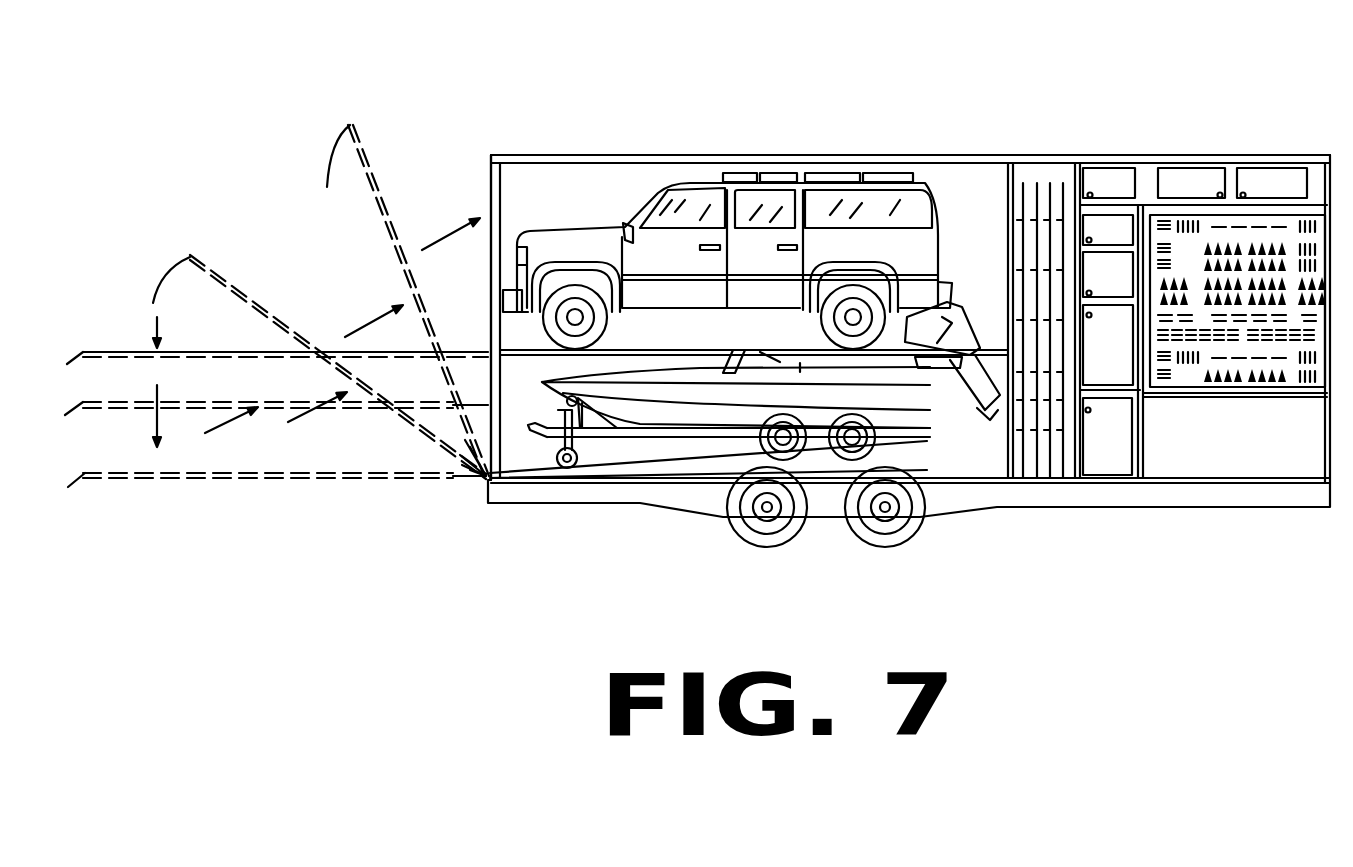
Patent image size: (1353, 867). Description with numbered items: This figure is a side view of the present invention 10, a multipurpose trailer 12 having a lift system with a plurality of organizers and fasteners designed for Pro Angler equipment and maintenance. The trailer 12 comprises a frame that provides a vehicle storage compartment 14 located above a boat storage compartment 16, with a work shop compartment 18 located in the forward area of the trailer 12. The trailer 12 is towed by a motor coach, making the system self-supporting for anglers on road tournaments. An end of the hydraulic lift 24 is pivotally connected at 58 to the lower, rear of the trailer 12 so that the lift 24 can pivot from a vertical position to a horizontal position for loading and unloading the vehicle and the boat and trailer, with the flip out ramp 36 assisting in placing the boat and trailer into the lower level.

The present invention 10 is at (1012, 113).
The trailer 12 is at (808, 160).
The vehicle storage compartment 14 is at (537, 158).
The boat storage compartment 16 is at (857, 448).
The work shop compartment 18 is at (1238, 460).
The hydraulic lift 24 is at (393, 413).
The flip out ramp 36 is at (83, 410).
The pivotal connection 58 is at (480, 490).